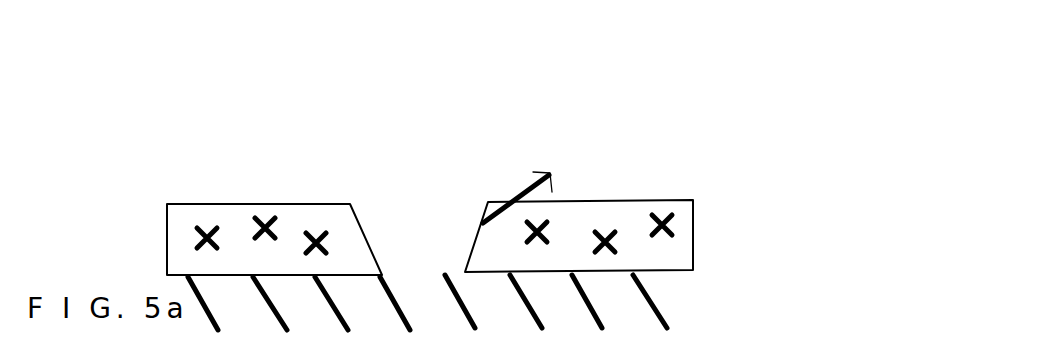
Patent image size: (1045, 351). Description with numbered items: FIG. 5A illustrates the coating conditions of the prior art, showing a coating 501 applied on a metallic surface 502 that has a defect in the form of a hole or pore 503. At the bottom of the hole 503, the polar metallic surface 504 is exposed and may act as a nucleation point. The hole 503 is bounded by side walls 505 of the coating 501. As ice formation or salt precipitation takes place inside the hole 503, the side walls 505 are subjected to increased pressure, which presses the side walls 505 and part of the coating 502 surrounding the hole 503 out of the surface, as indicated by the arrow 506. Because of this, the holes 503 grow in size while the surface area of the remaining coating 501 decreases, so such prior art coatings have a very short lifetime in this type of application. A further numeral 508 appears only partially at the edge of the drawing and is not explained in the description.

The coating 501 is at (590, 202).
The metallic surface 502 is at (673, 305).
The hole 503 is at (445, 198).
The polar metallic surface 504 is at (422, 253).
The side walls 505 is at (473, 242).
The arrow 506 is at (500, 207).
The partial numeral 508 is at (687, 339).